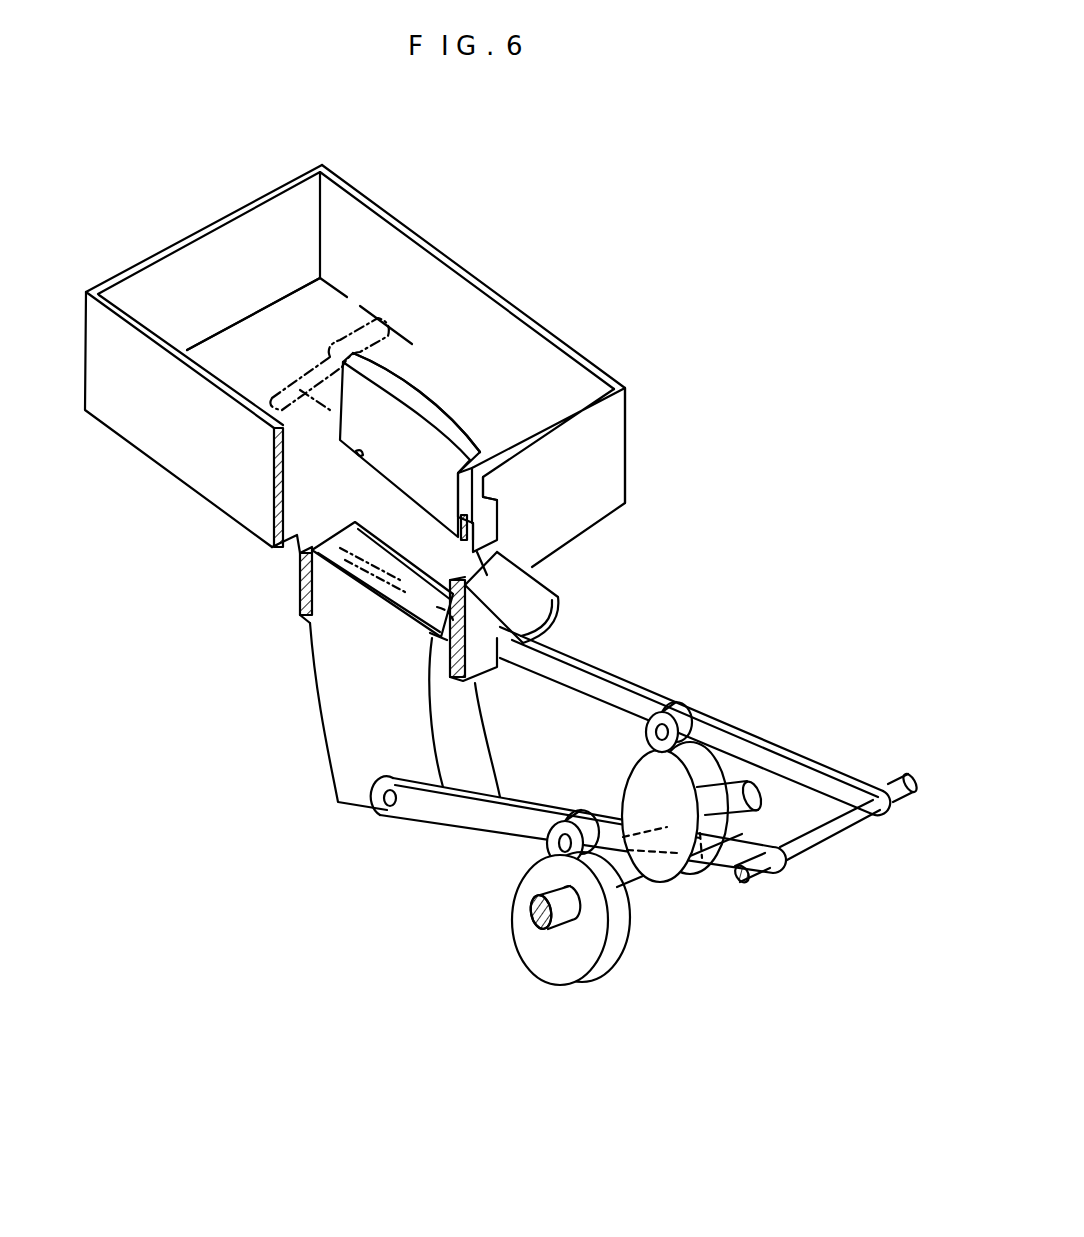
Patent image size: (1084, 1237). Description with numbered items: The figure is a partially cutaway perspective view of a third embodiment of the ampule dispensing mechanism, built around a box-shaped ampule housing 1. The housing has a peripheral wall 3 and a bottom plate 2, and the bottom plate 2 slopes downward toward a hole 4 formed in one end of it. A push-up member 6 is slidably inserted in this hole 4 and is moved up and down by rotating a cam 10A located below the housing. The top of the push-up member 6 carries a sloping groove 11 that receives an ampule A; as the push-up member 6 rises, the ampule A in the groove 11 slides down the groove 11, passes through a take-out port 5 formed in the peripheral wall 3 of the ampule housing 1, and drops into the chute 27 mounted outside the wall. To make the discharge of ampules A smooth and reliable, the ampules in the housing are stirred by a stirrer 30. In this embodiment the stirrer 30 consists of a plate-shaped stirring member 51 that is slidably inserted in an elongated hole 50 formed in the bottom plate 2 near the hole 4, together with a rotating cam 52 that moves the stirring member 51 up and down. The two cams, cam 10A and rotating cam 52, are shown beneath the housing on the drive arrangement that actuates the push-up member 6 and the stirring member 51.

The ampule housing 1 is at (442, 244).
The bottom plate 2 is at (260, 358).
The peripheral wall 3 is at (523, 328).
The hole 4 is at (307, 580).
The take-out port 5 is at (500, 545).
The push-up member 6 is at (328, 695).
The cam 10A is at (547, 953).
The groove 11 is at (353, 570).
The chute 27 is at (540, 577).
The stirrer 30 is at (452, 410).
The elongated hole 50 is at (357, 456).
The stirring member 51 is at (390, 383).
The rotating cam 52 is at (628, 782).
The ampule A is at (345, 340).